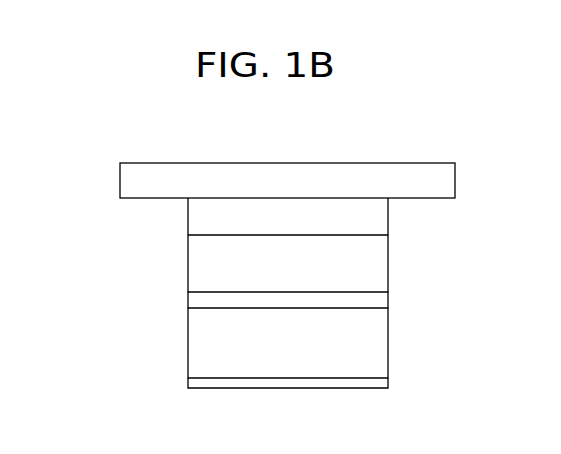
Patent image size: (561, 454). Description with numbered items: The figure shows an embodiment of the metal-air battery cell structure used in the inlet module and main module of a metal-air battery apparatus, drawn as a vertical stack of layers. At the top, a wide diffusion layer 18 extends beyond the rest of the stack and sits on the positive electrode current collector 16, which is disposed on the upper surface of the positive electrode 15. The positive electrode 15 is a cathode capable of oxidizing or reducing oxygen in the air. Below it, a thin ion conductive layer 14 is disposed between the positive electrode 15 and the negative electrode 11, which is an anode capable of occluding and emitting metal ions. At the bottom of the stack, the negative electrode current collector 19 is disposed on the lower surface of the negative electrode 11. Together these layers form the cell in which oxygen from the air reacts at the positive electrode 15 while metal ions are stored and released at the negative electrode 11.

The diffusion layer 18 is at (125, 180).
The positive electrode current collector 16 is at (190, 216).
The positive electrode 15 is at (193, 261).
The ion conductive layer 14 is at (193, 303).
The negative electrode 11 is at (193, 350).
The negative electrode current collector 19 is at (190, 386).